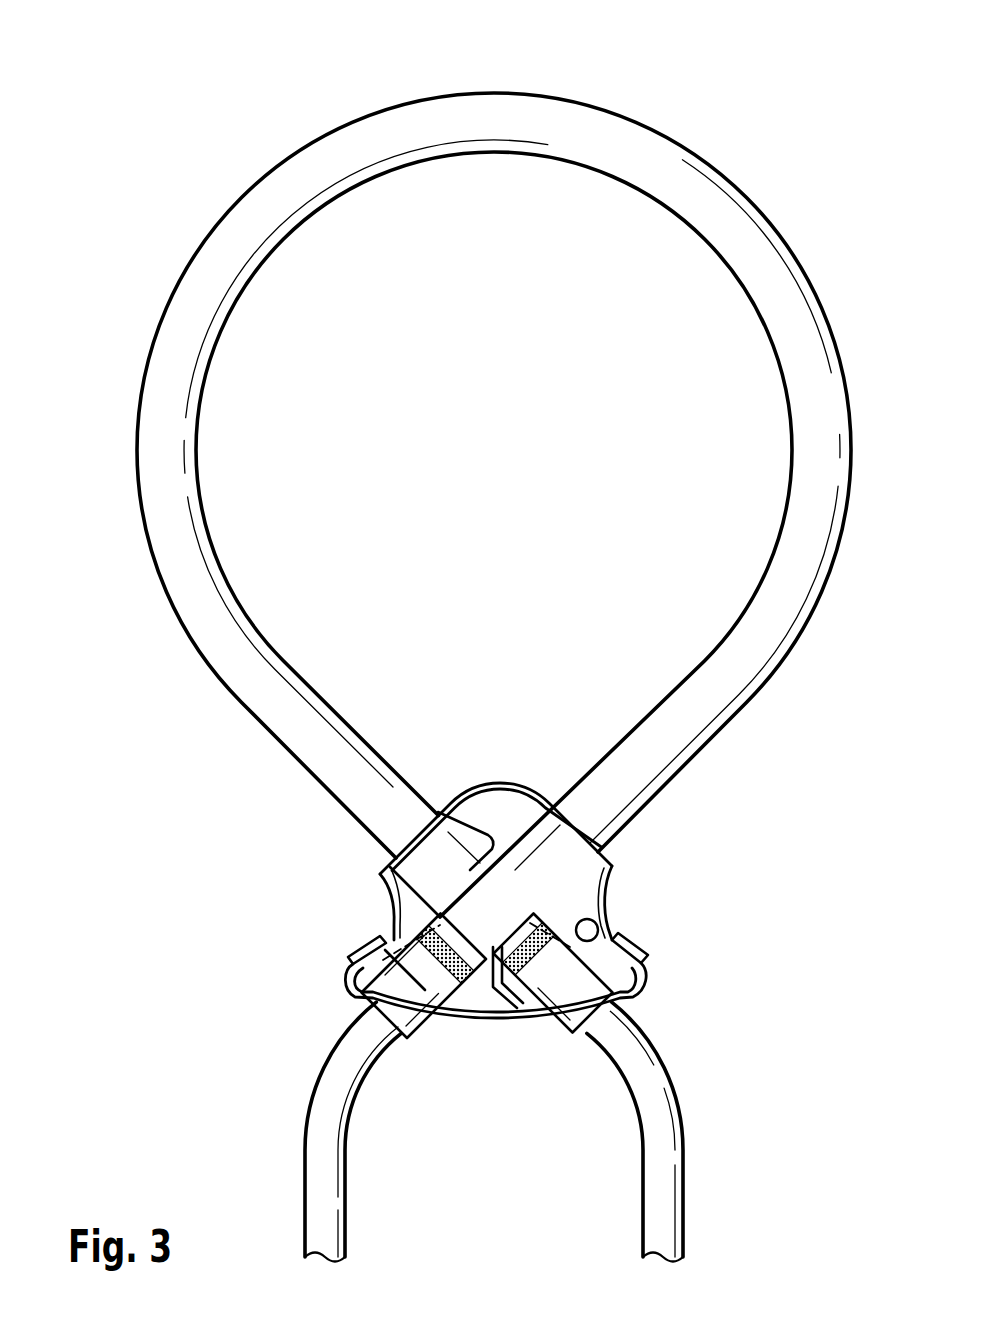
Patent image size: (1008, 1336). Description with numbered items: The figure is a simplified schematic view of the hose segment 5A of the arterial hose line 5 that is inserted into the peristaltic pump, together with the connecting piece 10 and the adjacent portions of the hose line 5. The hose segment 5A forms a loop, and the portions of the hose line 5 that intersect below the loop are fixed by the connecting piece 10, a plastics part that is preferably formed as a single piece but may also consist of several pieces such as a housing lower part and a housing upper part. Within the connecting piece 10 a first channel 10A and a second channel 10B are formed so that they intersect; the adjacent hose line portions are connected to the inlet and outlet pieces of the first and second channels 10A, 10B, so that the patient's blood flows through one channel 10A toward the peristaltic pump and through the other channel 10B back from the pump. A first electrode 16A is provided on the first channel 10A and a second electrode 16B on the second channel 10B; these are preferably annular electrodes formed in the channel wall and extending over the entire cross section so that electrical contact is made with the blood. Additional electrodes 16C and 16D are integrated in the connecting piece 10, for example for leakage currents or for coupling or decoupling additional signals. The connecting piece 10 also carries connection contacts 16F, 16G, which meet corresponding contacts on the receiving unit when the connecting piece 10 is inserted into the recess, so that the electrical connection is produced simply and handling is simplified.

The arterial hose line 5 is at (613, 147).
The hose segment 5A is at (396, 133).
The connecting piece 10 is at (512, 748).
The first channel 10A is at (487, 945).
The second channel 10B is at (590, 872).
The first electrode 16A is at (440, 918).
The second electrode 16B is at (533, 985).
The additional electrode 16C is at (463, 980).
The additional electrode 16D is at (598, 930).
The connection contact 16F is at (350, 952).
The connection contact 16G is at (628, 944).